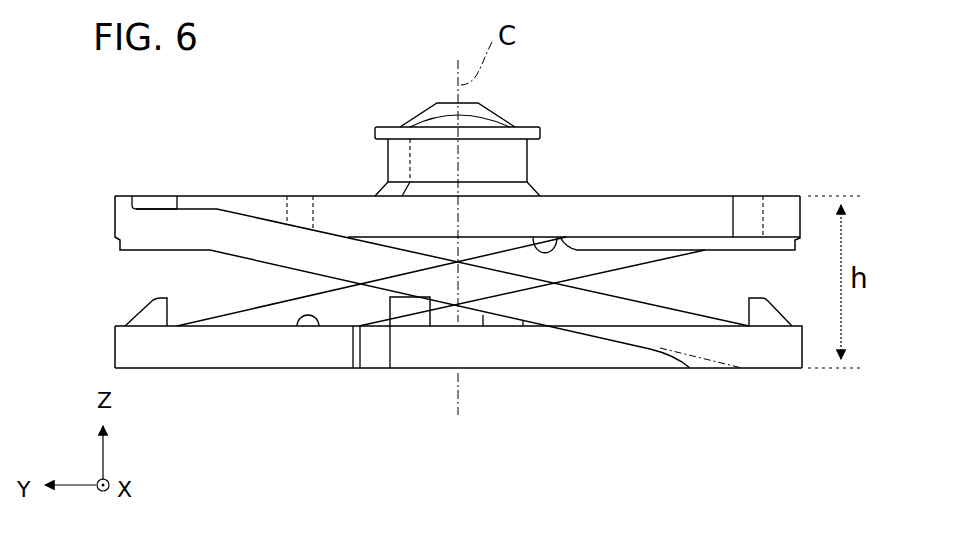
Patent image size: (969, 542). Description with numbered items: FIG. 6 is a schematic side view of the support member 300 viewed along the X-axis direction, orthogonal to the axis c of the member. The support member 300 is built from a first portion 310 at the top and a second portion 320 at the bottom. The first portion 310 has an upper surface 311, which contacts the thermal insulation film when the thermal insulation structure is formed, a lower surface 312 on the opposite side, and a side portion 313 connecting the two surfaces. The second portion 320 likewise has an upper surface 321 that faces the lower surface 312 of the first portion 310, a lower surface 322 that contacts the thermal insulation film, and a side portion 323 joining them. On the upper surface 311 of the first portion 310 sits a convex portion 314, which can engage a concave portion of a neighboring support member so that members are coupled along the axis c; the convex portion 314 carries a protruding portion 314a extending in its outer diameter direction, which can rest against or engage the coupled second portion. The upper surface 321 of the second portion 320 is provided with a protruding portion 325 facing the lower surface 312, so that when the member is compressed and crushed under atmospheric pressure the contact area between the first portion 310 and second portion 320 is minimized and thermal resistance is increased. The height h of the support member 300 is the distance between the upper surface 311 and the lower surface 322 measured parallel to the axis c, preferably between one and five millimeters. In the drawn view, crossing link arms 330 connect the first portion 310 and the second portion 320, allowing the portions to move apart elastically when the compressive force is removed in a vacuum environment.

The support member 300 is at (740, 128).
The first portion 310 is at (628, 210).
The upper surface 311 is at (672, 196).
The lower surface 312 is at (560, 236).
The side portion 313 is at (393, 217).
The convex portion 314 is at (388, 165).
The protruding portion 314a is at (541, 133).
The second portion 320 is at (518, 352).
The upper surface 321 is at (297, 326).
The lower surface 322 is at (600, 368).
The side portion 323 is at (420, 352).
The protruding portion 325 is at (152, 315).
The link arm 330 is at (263, 317).